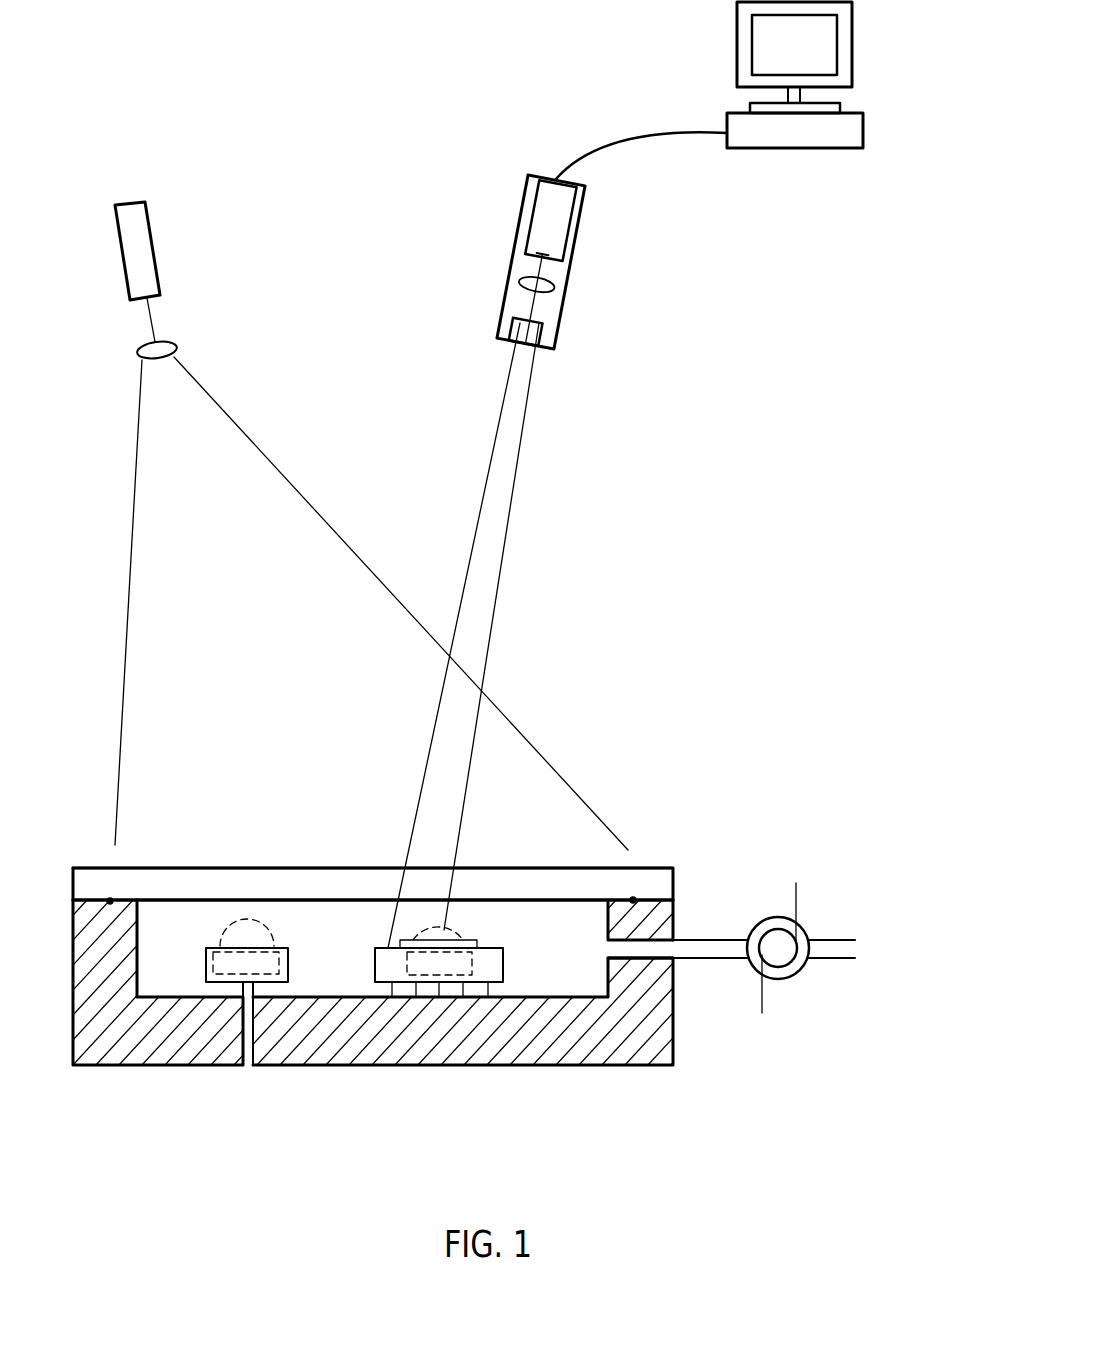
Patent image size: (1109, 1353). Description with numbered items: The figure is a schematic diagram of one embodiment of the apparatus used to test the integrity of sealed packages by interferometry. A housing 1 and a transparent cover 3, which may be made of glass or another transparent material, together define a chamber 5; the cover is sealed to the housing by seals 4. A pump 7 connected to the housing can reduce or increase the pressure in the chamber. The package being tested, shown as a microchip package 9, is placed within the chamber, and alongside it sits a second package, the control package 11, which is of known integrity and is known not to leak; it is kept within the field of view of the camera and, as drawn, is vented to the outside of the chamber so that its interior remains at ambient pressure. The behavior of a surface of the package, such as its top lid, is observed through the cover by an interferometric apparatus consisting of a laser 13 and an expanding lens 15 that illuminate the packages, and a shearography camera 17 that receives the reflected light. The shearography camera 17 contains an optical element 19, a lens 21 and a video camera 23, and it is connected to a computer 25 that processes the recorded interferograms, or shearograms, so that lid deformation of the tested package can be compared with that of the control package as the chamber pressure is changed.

The housing 1 is at (593, 1055).
The transparent cover 3 is at (157, 882).
The seals 4 is at (109, 898).
The chamber 5 is at (470, 918).
The pump 7 is at (805, 935).
The microchip package 9 is at (493, 965).
The control package 11 is at (222, 940).
The laser 13 is at (147, 255).
The expanding lens 15 is at (162, 345).
The shearography camera 17 is at (520, 222).
The optical element 19 is at (555, 342).
The lens 21 is at (532, 282).
The video camera 23 is at (553, 207).
The computer 25 is at (852, 132).